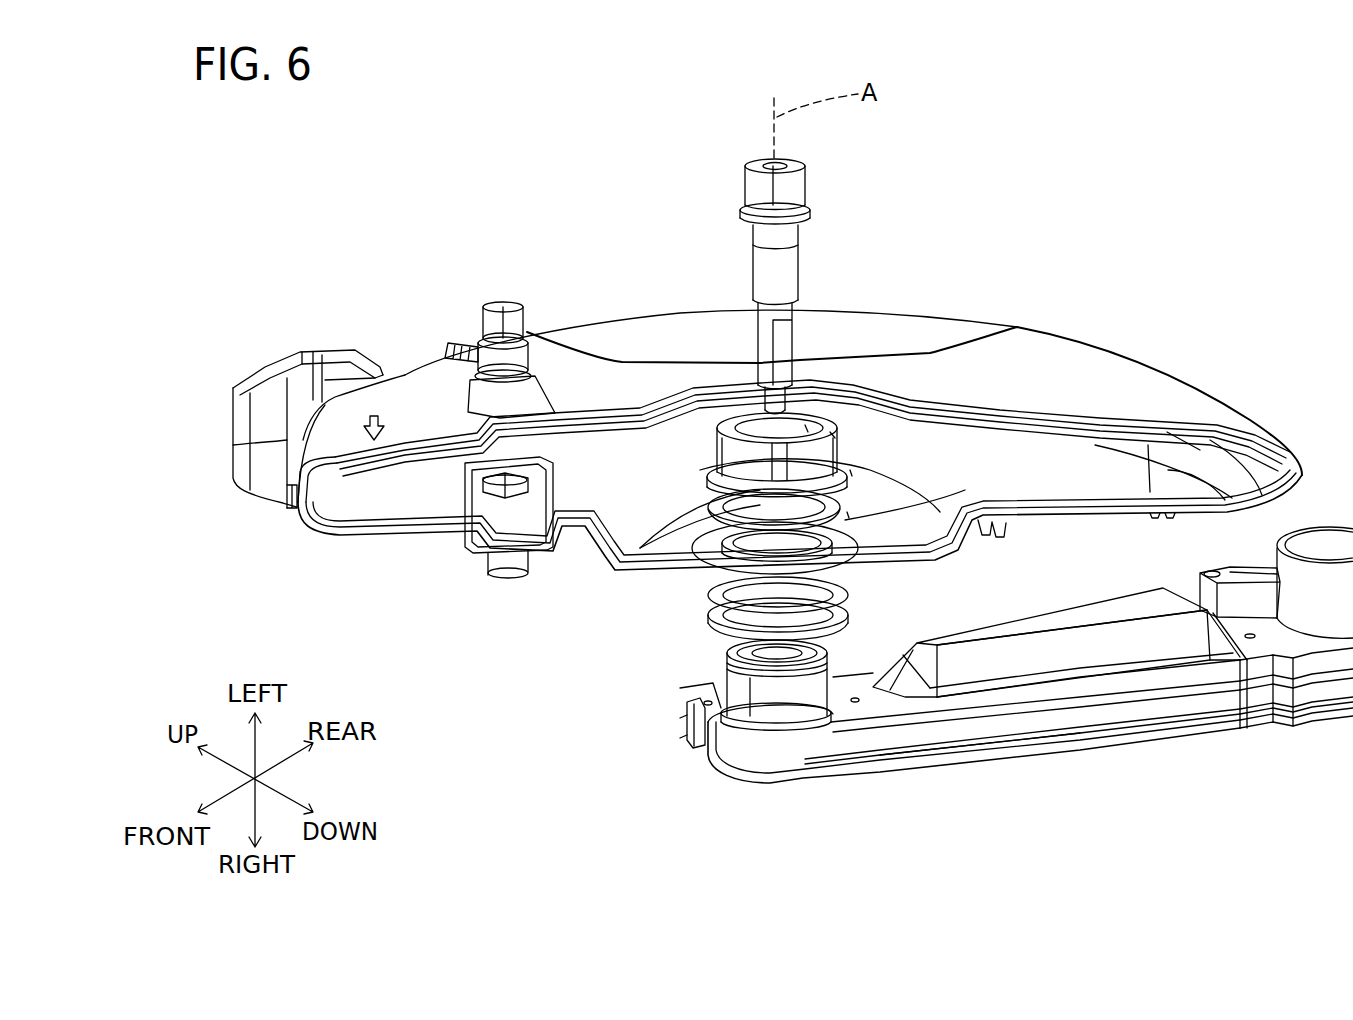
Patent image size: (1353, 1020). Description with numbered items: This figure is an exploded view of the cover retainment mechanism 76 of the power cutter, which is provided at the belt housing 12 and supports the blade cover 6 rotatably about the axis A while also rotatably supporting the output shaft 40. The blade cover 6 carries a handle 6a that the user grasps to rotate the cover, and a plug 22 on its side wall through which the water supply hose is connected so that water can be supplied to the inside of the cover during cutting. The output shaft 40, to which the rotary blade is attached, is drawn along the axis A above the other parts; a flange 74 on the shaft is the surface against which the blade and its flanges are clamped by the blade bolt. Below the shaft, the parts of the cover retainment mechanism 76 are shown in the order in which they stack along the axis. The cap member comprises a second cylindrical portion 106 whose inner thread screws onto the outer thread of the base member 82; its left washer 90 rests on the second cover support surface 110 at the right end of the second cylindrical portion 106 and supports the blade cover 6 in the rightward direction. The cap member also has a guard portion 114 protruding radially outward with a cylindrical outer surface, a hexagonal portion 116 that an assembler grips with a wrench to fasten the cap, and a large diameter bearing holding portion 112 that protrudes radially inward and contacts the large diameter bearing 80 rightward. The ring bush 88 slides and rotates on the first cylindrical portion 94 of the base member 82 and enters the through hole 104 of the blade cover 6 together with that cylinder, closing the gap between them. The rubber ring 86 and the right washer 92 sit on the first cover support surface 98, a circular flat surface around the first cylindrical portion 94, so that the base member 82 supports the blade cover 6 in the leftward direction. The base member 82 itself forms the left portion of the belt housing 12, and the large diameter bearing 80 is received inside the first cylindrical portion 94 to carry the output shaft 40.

The blade cover 6 is at (386, 540).
The handle 6a is at (297, 368).
The plug 22 is at (490, 330).
The flange 74 is at (813, 207).
The output shaft 40 is at (790, 263).
The second cylindrical portion 106 is at (715, 478).
The large diameter bearing holding portion 112 is at (808, 422).
The hexagonal portion 116 is at (830, 432).
The guard portion 114 is at (850, 470).
The second cover support surface 110 is at (847, 512).
The through hole 104 is at (930, 558).
The left washer 90 is at (712, 512).
The ring bush 88 is at (708, 547).
The right washer 92 is at (708, 596).
The rubber ring 86 is at (710, 620).
The large diameter bearing 80 is at (725, 650).
The first cylindrical portion 94 is at (740, 683).
The cover retainment mechanism 76 is at (540, 666).
The belt housing 12 is at (1158, 710).
The base member 82 is at (1002, 730).
The first cover support surface 98 is at (684, 750).